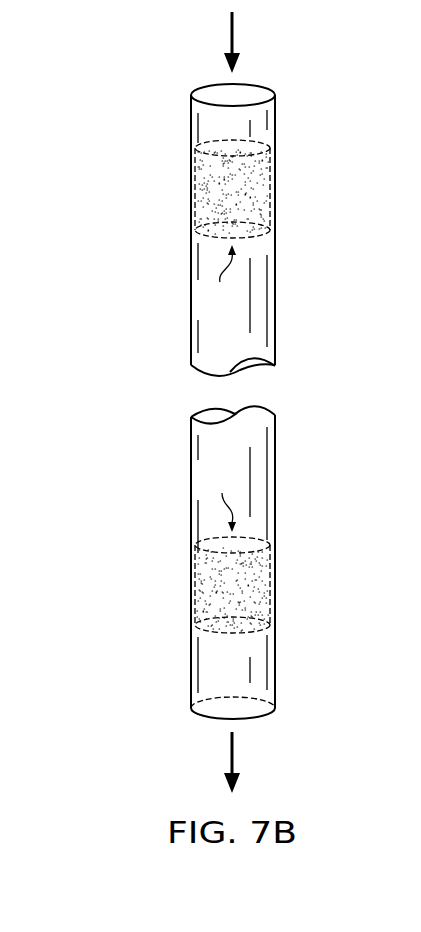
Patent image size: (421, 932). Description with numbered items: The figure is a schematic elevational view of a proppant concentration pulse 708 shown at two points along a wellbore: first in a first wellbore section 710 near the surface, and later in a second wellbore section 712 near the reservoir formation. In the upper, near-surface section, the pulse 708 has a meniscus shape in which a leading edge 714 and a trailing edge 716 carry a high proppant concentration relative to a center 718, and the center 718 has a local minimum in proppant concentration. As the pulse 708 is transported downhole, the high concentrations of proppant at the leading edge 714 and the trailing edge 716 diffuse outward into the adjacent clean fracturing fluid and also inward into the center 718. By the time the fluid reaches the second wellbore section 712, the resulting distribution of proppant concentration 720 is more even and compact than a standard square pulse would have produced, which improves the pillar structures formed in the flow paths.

The proppant concentration pulse 708 is at (221, 388).
The first wellbore section 710 is at (185, 90).
The second wellbore section 712 is at (185, 410).
The leading edge 714 is at (256, 233).
The trailing edge 716 is at (268, 144).
The center 718 is at (272, 193).
The resulting distribution of proppant concentration 720 is at (280, 548).